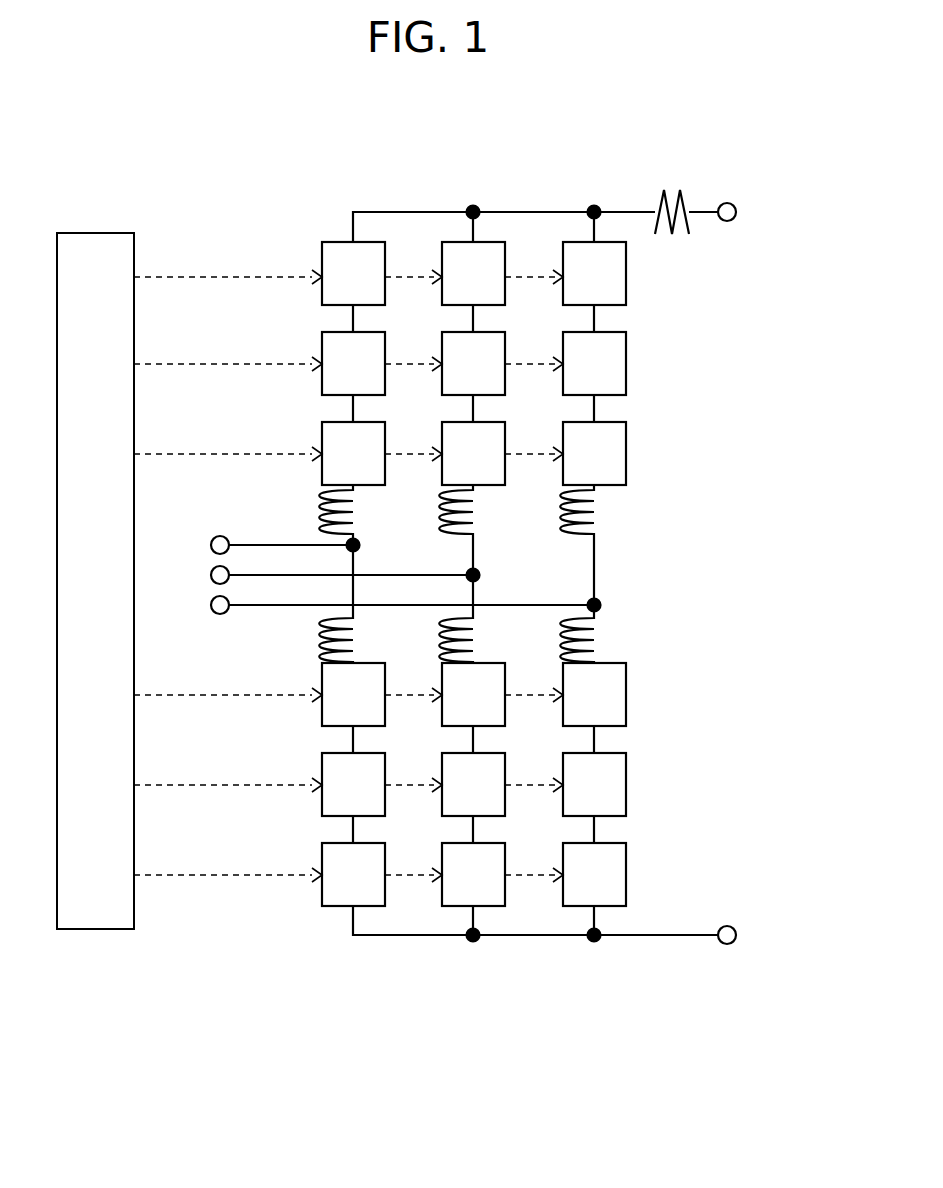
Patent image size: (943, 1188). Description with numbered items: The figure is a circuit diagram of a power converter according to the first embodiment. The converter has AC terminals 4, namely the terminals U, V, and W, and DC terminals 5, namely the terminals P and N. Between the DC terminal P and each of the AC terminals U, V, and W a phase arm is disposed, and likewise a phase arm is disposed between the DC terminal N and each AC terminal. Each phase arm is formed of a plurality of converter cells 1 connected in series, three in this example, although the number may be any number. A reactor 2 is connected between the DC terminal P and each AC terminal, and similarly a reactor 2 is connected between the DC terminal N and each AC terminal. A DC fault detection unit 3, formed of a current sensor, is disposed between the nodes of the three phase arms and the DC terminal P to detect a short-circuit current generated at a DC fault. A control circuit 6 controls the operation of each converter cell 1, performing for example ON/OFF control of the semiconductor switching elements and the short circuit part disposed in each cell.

The converter cell 1 is at (322, 256).
The reactor 2 is at (313, 507).
The DC fault detection unit 3 is at (668, 182).
The AC terminals 4 is at (220, 615).
The DC terminals 5 is at (737, 200).
The control circuit 6 is at (103, 231).